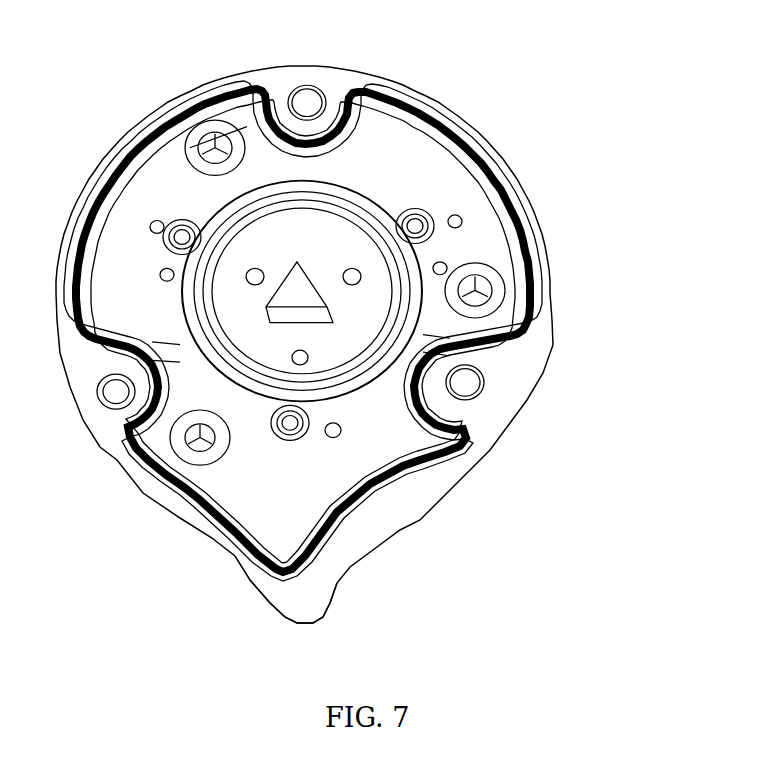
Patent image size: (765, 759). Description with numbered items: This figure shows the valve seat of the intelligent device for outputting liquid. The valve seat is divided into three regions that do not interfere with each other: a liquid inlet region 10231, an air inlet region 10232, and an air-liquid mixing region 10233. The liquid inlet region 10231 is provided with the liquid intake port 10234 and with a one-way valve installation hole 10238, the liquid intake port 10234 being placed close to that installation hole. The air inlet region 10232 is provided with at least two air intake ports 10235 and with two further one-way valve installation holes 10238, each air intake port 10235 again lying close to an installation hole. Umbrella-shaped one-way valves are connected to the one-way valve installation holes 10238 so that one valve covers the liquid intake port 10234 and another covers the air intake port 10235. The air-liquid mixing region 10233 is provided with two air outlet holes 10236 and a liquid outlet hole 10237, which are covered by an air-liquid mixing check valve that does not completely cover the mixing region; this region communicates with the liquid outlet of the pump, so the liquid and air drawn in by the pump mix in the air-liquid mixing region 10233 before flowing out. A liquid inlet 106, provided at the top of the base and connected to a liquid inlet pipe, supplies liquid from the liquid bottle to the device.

The liquid inlet region 10231 is at (386, 444).
The air inlet region 10232 is at (437, 183).
The air-liquid mixing region 10233 is at (370, 310).
The liquid intake port 10234 is at (336, 440).
The air intake port 10235 is at (162, 268).
The air outlet hole 10236 is at (350, 268).
The liquid outlet hole 10237 is at (297, 372).
The one-way valve installation hole 10238 is at (410, 212).
The liquid inlet 106 is at (317, 627).